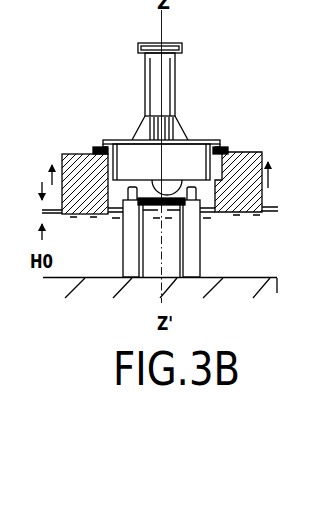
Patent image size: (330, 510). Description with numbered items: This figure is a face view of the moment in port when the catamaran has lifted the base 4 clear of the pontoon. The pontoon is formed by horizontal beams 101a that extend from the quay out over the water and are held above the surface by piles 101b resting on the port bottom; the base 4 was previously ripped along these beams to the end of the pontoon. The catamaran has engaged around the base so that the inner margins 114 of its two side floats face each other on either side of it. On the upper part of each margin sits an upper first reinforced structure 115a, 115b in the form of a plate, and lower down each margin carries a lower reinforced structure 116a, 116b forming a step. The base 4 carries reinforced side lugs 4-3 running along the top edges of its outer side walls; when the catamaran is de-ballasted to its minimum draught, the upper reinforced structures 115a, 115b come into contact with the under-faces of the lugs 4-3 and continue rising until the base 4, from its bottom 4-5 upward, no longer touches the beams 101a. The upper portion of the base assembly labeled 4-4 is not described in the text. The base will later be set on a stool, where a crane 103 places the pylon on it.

The base 4 is at (203, 129).
The reinforced side lugs 4-3 is at (112, 139).
The horn shaft with cap 4-4 is at (175, 58).
The bottom of the base 4-5 is at (180, 187).
The crane 103 is at (246, 153).
The inner margins of the side floats 114 is at (63, 156).
The upper first reinforced structure 115a is at (97, 147).
The upper first reinforced structure 115b is at (220, 147).
The lower reinforced structure forming a step 116a is at (222, 170).
The lower reinforced structure forming a step 116b is at (63, 158).
The horizontal beams 101a is at (133, 257).
The piles 101b is at (188, 257).